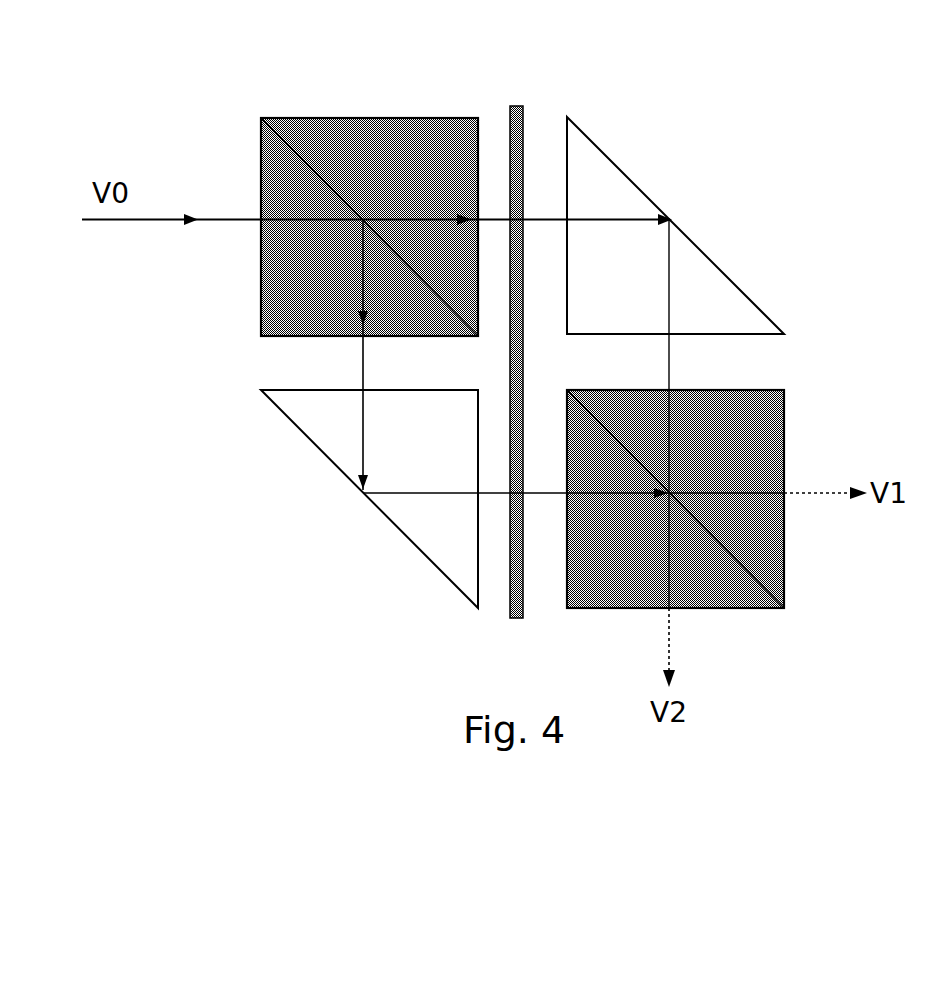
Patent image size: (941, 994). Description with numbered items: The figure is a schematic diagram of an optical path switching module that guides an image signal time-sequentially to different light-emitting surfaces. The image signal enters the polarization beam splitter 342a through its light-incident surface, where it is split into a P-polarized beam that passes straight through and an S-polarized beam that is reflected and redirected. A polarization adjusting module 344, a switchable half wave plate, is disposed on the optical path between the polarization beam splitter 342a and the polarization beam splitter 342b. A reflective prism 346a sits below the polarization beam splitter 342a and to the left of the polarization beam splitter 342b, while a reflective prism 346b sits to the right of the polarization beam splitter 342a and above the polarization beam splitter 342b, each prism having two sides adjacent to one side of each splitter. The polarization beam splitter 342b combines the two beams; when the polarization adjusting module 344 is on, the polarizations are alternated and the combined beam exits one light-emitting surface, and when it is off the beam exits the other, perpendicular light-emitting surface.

The polarization beam splitter 342a is at (387, 117).
The polarization adjusting module 344 is at (513, 106).
The reflective prism 346b is at (713, 265).
The reflective prism 346a is at (388, 515).
The polarization beam splitter 342b is at (772, 610).